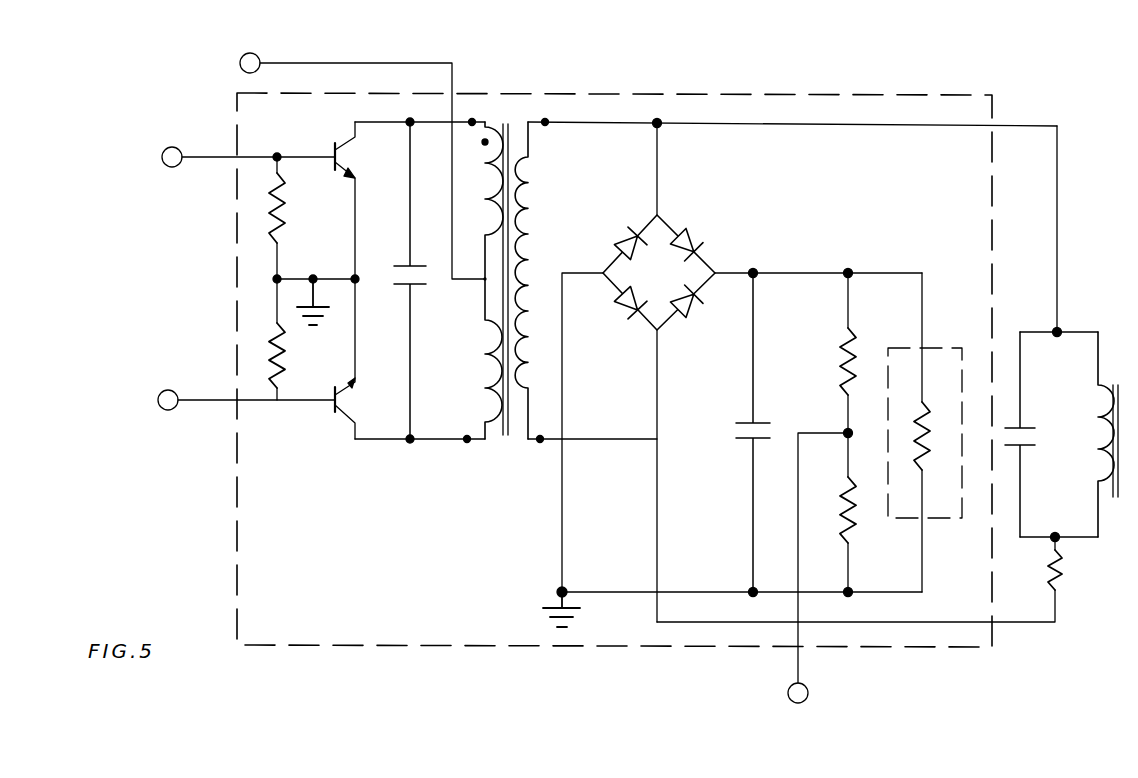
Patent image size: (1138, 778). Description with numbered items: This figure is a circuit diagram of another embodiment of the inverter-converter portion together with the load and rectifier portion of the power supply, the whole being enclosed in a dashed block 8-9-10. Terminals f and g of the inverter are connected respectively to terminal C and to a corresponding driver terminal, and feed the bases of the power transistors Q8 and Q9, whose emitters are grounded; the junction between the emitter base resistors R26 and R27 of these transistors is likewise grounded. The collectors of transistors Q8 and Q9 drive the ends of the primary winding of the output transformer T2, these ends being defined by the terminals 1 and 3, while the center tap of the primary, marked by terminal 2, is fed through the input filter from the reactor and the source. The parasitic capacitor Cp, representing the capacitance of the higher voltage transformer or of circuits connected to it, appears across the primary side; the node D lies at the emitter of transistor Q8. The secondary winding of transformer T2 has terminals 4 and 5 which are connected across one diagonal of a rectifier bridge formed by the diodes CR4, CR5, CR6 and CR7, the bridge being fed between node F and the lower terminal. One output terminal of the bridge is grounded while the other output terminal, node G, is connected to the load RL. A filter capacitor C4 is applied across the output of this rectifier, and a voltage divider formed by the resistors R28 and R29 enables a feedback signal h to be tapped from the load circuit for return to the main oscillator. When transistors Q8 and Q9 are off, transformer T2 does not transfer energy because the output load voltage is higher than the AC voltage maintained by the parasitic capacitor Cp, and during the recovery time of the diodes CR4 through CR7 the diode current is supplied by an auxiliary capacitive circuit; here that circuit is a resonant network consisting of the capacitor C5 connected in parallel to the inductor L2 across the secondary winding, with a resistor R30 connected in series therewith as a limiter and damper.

The converter block 8-9-10 is at (868, 102).
The terminal c C is at (349, 166).
The terminal f is at (237, 160).
The terminal g is at (233, 403).
The feedback signal h is at (818, 569).
The power transistor Q8 is at (330, 197).
The power transistor Q9 is at (330, 360).
The emitter base resistor R26 is at (302, 218).
The emitter base resistor R27 is at (302, 339).
The parasitic capacitor Cp is at (401, 280).
The node D is at (405, 176).
The transformer T2 is at (505, 298).
The terminal 1 is at (478, 108).
The input filter 2 is at (474, 266).
The terminal 3 is at (468, 453).
The terminal 4 is at (551, 108).
The terminal 5 is at (546, 453).
The node F is at (674, 167).
The node G is at (818, 256).
The diode CR4 is at (619, 229).
The diode CR5 is at (709, 229).
The diode CR6 is at (619, 318).
The diode CR7 is at (701, 318).
The filter capacitor C4 is at (761, 435).
The resistor R28 is at (868, 375).
The resistor R29 is at (867, 537).
The load RL is at (925, 432).
The capacitor C5 is at (1028, 434).
The inductor L2 is at (1112, 434).
The resistor R30 is at (1080, 562).